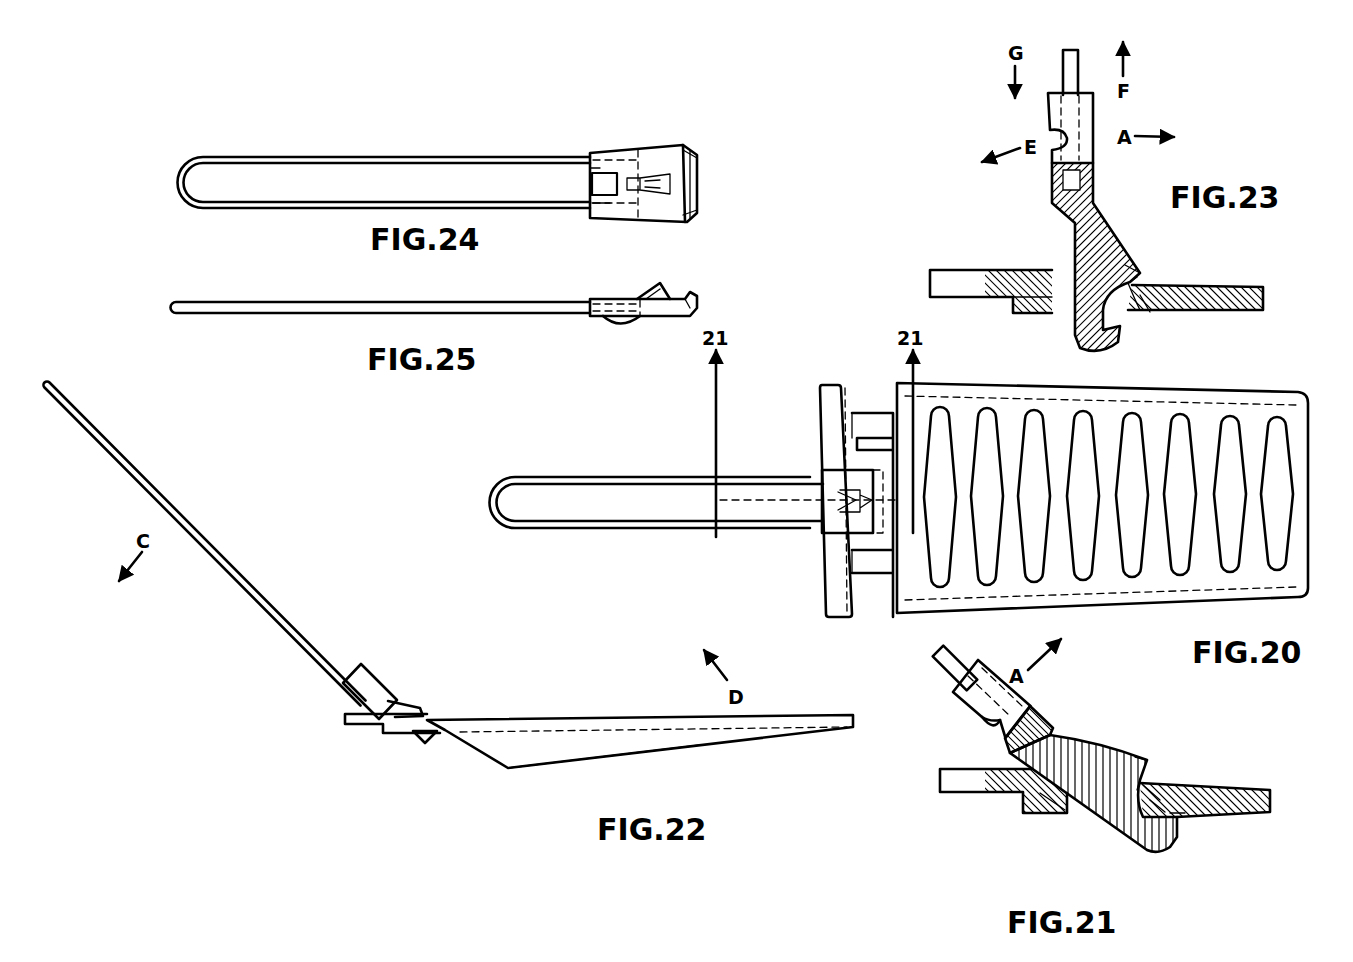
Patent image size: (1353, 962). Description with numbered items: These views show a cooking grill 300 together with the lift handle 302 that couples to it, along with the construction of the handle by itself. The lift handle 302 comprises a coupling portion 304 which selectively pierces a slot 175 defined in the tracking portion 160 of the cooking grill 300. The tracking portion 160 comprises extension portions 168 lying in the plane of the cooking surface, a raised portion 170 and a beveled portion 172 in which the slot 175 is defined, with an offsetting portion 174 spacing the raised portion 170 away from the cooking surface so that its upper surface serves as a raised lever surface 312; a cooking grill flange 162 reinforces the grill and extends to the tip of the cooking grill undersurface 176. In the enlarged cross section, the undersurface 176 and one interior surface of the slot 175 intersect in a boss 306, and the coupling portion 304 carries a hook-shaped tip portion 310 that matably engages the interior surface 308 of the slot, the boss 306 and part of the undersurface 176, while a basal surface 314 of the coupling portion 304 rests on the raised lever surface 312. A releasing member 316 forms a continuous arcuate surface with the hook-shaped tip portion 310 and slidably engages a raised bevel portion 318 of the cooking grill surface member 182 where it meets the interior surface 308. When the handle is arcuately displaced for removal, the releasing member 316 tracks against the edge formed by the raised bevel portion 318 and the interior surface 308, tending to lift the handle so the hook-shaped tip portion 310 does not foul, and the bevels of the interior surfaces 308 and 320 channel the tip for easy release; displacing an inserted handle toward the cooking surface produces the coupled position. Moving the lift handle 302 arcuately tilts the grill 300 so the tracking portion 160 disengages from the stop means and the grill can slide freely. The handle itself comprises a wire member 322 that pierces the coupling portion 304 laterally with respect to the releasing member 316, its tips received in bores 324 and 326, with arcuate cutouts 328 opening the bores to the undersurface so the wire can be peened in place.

In FIG. 20, the tracking portion 160 is at (866, 594).
In FIG. 21, the tracking portion 160 is at (1021, 819).
In FIG. 22, the cooking grill flange 162 is at (562, 750).
In FIG. 20, the extension portions 168 is at (873, 572).
In FIG. 22, the extension portions 168 is at (437, 731).
In FIG. 20, the raised portion 170 is at (830, 588).
In FIG. 22, the raised portion 170 is at (360, 722).
In FIG. 21, the raised portion 170 is at (1012, 794).
In FIG. 22, the beveled portion 172 is at (398, 703).
In FIG. 22, the offsetting portion 174 is at (383, 736).
In FIG. 20, the slot 175 is at (887, 416).
In FIG. 21, the slot 175 is at (1068, 806).
In FIG. 21, the cooking grill undersurface 176 is at (1182, 814).
In FIG. 23, the cooking grill surface member 182 is at (1230, 287).
In FIG. 22, the cooking grill surface member 182 is at (539, 722).
In FIG. 21, the cooking grill surface member 182 is at (1266, 808).
In FIG. 20, the cooking grill 300 is at (1313, 412).
In FIG. 22, the cooking grill 300 is at (758, 754).
In FIG. 25, the lift handle 302 is at (226, 320).
In FIG. 20, the lift handle 302 is at (574, 538).
In FIG. 22, the lift handle 302 is at (182, 488).
In FIG. 24, the coupling portion 304 is at (613, 143).
In FIG. 23, the coupling portion 304 is at (1045, 184).
In FIG. 20, the coupling portion 304 is at (826, 466).
In FIG. 22, the coupling portion 304 is at (379, 662).
In FIG. 21, the coupling portion 304 is at (995, 657).
In FIG. 23, the boss 306 is at (1155, 318).
In FIG. 21, the boss 306 is at (1163, 787).
In FIG. 23, the interior surface 308 is at (1132, 320).
In FIG. 21, the interior surface 308 is at (1158, 776).
In FIG. 24, the hook-shaped tip portion 310 is at (700, 175).
In FIG. 25, the hook-shaped tip portion 310 is at (700, 290).
In FIG. 23, the hook-shaped tip portion 310 is at (1086, 352).
In FIG. 21, the hook-shaped tip portion 310 is at (1168, 848).
In FIG. 21, the raised lever surface 312 is at (945, 696).
In FIG. 25, the basal surface 314 is at (629, 313).
In FIG. 21, the basal surface 314 is at (1026, 757).
In FIG. 24, the releasing member 316 is at (633, 173).
In FIG. 25, the releasing member 316 is at (639, 288).
In FIG. 23, the releasing member 316 is at (1120, 248).
In FIG. 20, the releasing member 316 is at (838, 510).
In FIG. 21, the releasing member 316 is at (1129, 756).
In FIG. 23, the raised bevel portion 318 is at (1138, 277).
In FIG. 21, the raised bevel portion 318 is at (1141, 770).
In FIG. 23, the interior surface 320 is at (1066, 314).
In FIG. 24, the wire member 322 is at (390, 157).
In FIG. 25, the wire member 322 is at (262, 300).
In FIG. 24, the bore 324 is at (597, 160).
In FIG. 24, the bore 326 is at (594, 204).
In FIG. 25, the arcuate cutouts 328 is at (603, 317).